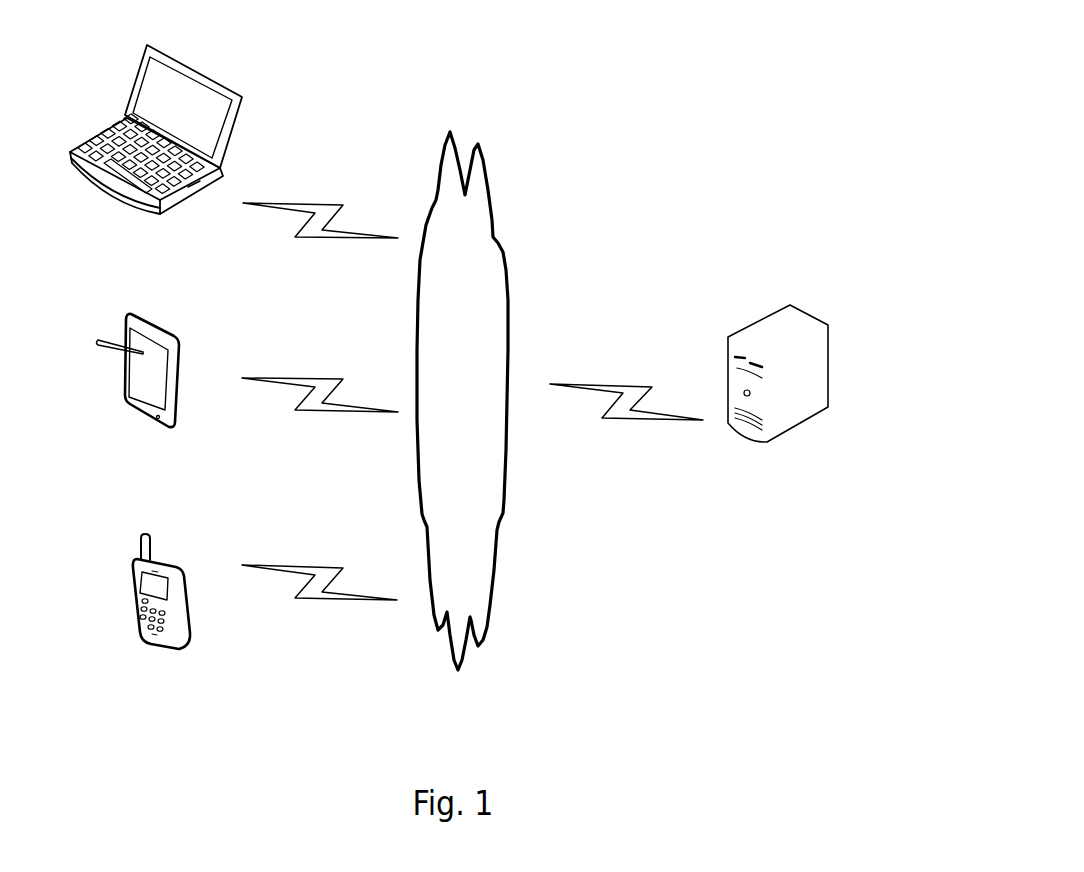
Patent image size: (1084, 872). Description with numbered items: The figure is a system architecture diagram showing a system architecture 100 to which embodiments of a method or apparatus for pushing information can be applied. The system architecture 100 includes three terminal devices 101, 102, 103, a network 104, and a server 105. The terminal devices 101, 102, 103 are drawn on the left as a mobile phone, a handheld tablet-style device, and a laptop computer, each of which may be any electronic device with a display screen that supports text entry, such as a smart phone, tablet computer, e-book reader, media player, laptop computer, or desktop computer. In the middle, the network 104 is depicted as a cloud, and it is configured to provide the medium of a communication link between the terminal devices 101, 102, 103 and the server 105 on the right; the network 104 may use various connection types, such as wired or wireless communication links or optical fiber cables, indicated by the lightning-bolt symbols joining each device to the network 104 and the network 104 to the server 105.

The system architecture 100 is at (688, 36).
The terminal device 101 is at (161, 612).
The terminal device 102 is at (138, 392).
The terminal device 103 is at (156, 151).
The network 104 is at (462, 401).
The server 105 is at (778, 397).